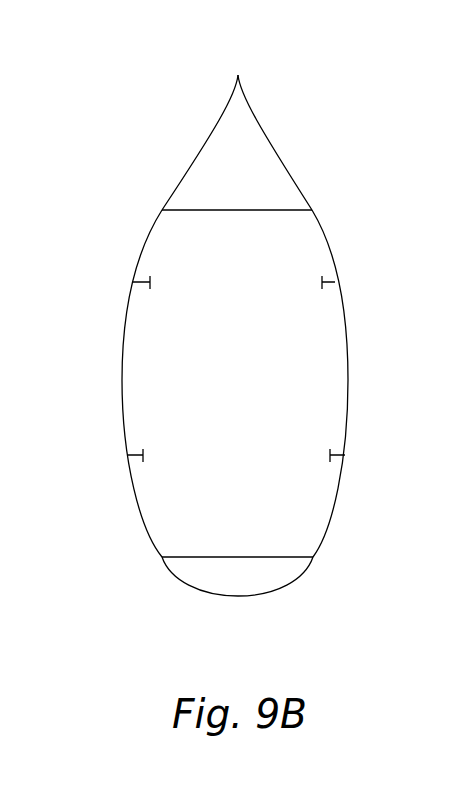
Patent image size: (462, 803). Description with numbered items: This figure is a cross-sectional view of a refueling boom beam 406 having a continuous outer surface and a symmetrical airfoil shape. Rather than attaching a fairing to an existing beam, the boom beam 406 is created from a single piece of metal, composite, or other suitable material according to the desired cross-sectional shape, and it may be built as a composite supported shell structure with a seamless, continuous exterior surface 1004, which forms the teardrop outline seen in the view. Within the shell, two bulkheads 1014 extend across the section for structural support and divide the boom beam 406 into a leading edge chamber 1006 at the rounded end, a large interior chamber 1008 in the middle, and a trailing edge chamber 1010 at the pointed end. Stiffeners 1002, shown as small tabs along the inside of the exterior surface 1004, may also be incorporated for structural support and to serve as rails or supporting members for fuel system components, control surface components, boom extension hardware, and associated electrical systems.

The boom beam 406 is at (243, 335).
The stiffeners 1002 is at (149, 284).
The exterior surface 1004 is at (281, 335).
The leading edge chamber 1006 is at (257, 587).
The interior chamber 1008 is at (258, 412).
The trailing edge chamber 1010 is at (262, 190).
The bulkheads 1014 is at (265, 210).